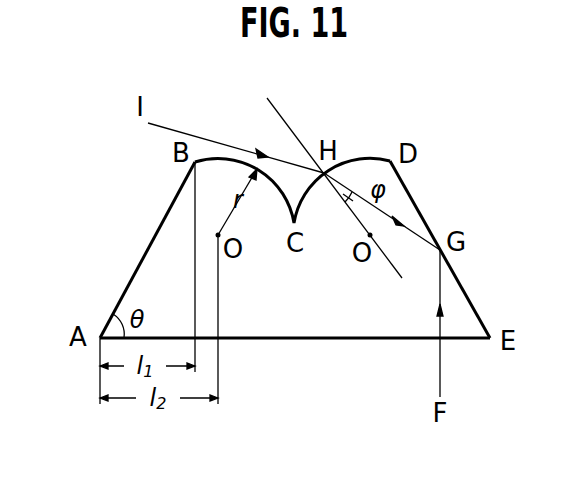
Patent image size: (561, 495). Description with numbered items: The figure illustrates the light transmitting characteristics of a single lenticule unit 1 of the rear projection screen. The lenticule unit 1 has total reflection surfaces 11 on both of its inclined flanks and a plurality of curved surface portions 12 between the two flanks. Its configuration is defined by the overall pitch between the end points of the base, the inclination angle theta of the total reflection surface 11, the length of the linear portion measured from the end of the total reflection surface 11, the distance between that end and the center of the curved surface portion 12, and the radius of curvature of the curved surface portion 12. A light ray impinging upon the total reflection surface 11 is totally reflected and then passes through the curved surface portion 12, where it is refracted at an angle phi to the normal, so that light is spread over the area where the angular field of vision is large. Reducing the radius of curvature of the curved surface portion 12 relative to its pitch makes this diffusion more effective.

The lenticule unit 1 is at (350, 150).
The total reflection surface 11 is at (128, 282).
The curved surface portion 12 is at (230, 157).